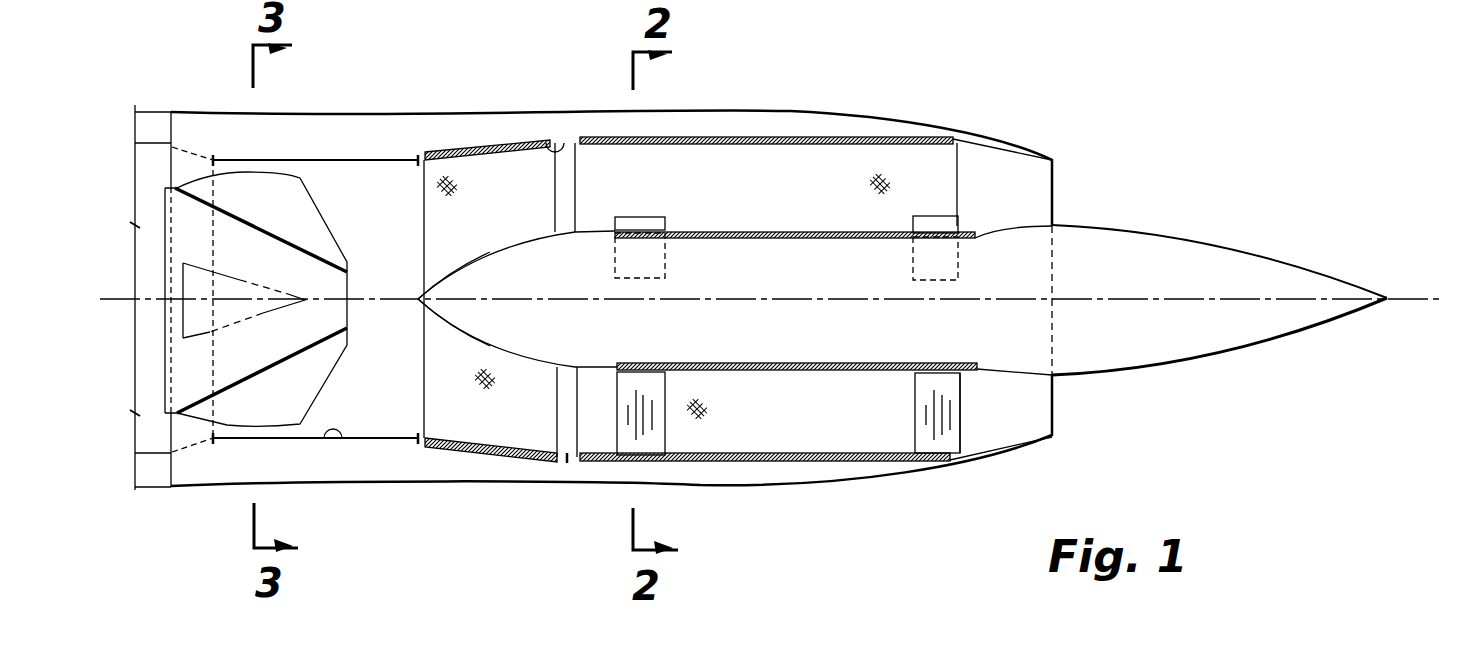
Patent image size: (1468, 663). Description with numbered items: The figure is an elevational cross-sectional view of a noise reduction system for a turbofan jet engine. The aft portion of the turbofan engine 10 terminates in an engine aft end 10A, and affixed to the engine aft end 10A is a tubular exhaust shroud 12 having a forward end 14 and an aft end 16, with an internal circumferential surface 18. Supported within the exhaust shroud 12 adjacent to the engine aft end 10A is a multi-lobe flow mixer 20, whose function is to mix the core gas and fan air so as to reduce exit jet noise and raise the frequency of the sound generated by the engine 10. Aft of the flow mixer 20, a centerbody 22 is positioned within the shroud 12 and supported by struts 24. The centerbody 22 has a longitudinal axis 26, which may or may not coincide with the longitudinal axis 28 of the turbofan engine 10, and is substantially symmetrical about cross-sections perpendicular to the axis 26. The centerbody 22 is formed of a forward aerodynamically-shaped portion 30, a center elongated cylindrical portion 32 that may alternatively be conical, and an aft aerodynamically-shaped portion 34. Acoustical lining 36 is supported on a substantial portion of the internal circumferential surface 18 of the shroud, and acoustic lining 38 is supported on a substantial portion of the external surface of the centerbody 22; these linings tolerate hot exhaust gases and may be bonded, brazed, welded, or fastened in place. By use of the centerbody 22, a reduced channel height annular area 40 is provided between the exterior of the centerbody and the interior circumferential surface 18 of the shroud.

The turbofan engine 10 is at (143, 117).
The engine aft end 10A is at (173, 137).
The exhaust shroud 12 is at (765, 122).
The forward end 14 is at (158, 110).
The aft end 16 is at (1058, 185).
The internal circumferential surface 18 is at (543, 148).
The flow mixer 20 is at (297, 227).
The centerbody 22 is at (790, 381).
The struts 24 is at (665, 217).
The longitudinal axis 26 is at (775, 295).
The longitudinal axis 28 is at (150, 297).
The forward aerodynamically-shaped portion 30 is at (508, 263).
The center elongated cylindrical portion 32 is at (865, 232).
The aft aerodynamically-shaped portion 34 is at (1153, 238).
The acoustical lining 36 is at (825, 148).
The acoustic lining 38 is at (778, 228).
The reduced channel height annular area 40 is at (646, 197).